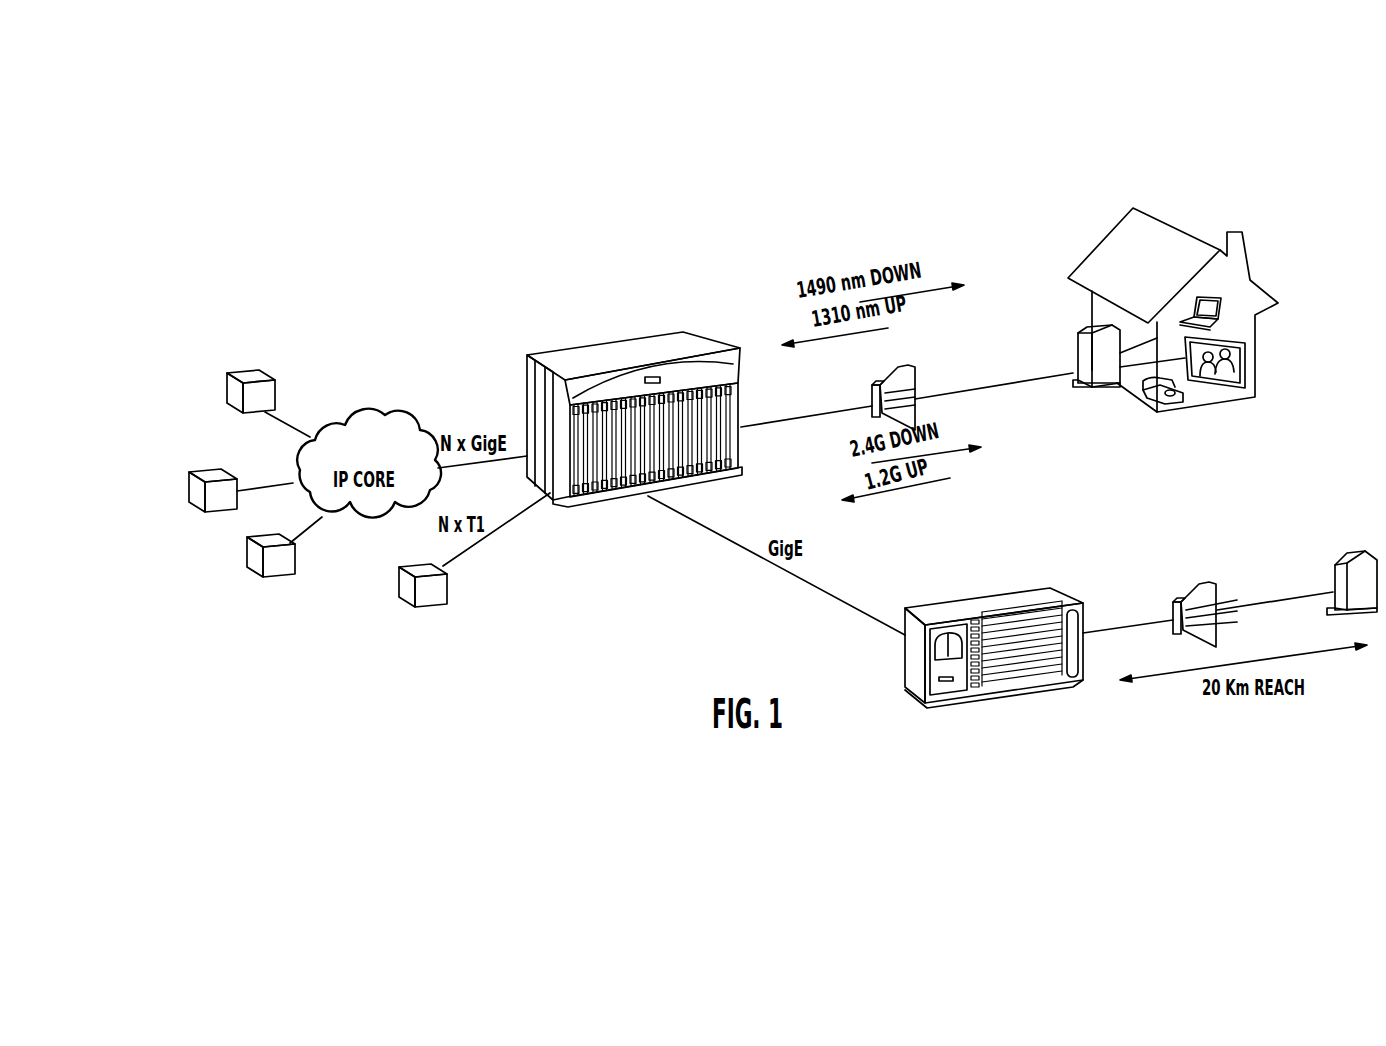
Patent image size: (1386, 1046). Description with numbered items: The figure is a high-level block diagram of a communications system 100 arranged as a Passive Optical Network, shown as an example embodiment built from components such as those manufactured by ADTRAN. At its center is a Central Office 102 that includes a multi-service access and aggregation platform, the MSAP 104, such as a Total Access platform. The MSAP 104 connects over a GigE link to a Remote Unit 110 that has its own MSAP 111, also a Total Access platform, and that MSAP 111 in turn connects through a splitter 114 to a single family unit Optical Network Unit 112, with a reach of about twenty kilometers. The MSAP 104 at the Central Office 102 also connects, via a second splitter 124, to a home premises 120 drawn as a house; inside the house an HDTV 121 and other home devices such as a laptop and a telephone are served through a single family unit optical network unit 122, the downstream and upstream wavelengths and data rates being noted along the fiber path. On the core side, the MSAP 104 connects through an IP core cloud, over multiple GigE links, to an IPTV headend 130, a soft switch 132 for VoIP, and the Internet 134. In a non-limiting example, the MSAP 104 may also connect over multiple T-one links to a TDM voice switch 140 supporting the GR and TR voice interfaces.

The communications system 100 is at (722, 253).
The Central Office 102 is at (642, 300).
The MSAP 104 is at (527, 362).
The Remote Unit 110 is at (1008, 565).
The MSAP 111 is at (948, 696).
The single family unit Optical Network Unit 112 is at (1335, 566).
The splitter 114 is at (1193, 592).
The home premises 120 is at (1250, 198).
The HDTV 121 is at (1222, 388).
The single family unit optical network unit 122 is at (1092, 332).
The splitter 124 is at (913, 387).
The IPTV headend 130 is at (267, 392).
The soft switch 132 is at (203, 500).
The Internet 134 is at (244, 564).
The TDM voice switch 140 is at (446, 592).